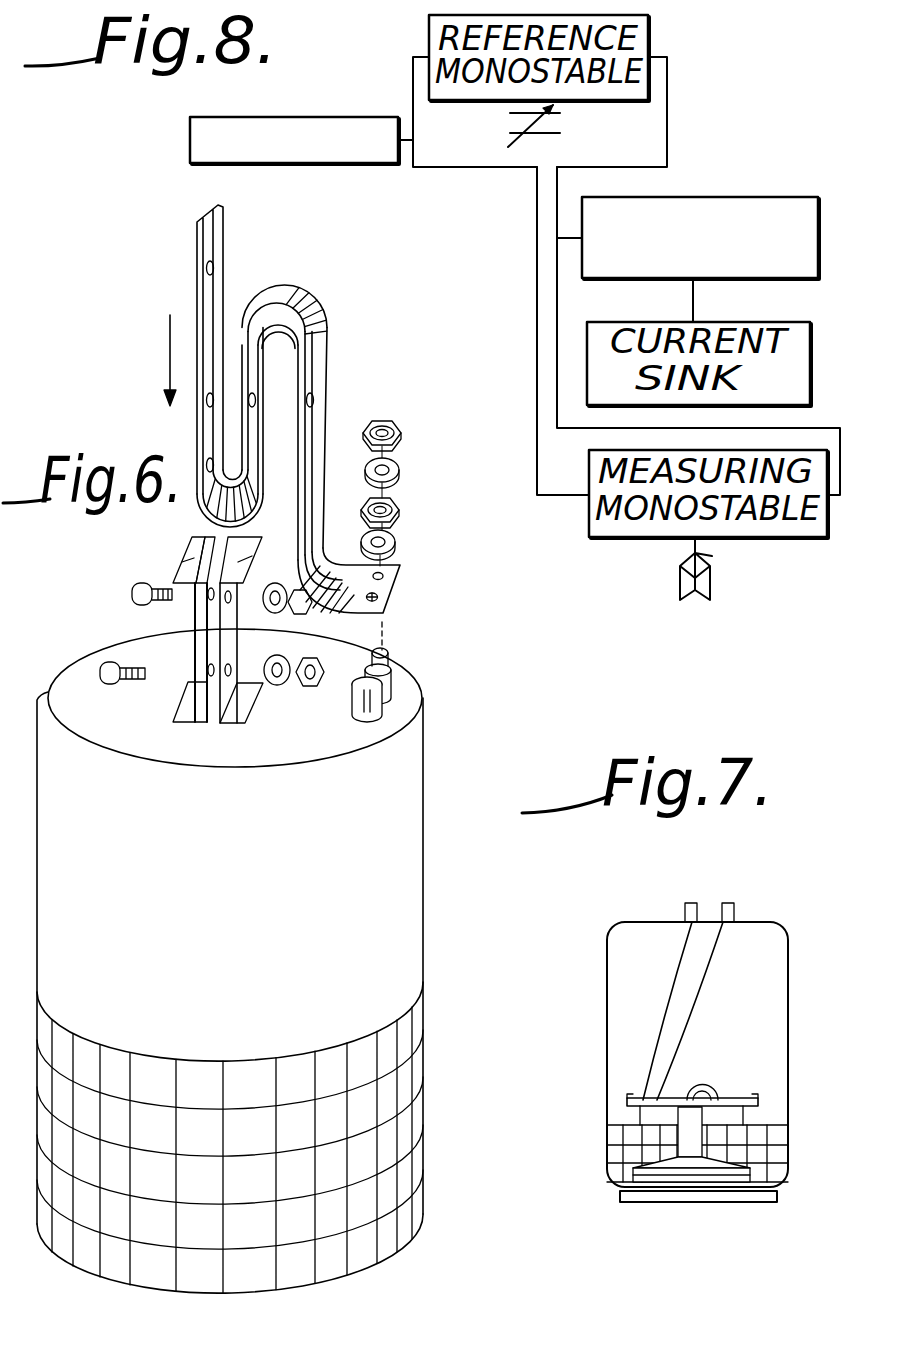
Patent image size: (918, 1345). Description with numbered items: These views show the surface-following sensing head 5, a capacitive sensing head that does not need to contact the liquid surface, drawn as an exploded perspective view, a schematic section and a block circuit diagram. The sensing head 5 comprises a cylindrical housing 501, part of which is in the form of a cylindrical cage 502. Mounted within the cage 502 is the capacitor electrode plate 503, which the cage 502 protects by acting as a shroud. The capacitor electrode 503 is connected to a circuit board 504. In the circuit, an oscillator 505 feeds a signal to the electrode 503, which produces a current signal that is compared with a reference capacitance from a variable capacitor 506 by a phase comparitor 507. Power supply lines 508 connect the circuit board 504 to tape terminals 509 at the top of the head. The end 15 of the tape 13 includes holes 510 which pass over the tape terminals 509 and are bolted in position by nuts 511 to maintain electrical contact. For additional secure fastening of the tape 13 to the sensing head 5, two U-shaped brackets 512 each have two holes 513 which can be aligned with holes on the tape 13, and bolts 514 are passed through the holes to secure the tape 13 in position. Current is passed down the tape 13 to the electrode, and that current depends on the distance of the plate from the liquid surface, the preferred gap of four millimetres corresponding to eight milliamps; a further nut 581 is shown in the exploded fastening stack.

In FIG. 6, the sensing head 5 is at (273, 961).
In FIG. 6, the tape 13 is at (207, 250).
In FIG. 6, the end of the tape 15 is at (380, 598).
In FIG. 6, the cylindrical housing 501 is at (407, 960).
In FIG. 6, the cylindrical cage 502 is at (402, 1086).
In FIG. 7, the cylindrical cage 502 is at (613, 1186).
In FIG. 8, the capacitor electrode plate 503 is at (731, 568).
In FIG. 7, the capacitor electrode plate 503 is at (627, 1171).
In FIG. 7, the circuit board 504 is at (627, 1100).
In FIG. 8, the oscillator 505 is at (365, 98).
In FIG. 8, the variable capacitor 506 is at (499, 126).
In FIG. 8, the phase comparitor 507 is at (657, 198).
In FIG. 7, the power supply lines 508 is at (692, 990).
In FIG. 6, the tape terminals 509 is at (400, 696).
In FIG. 7, the tape terminals 509 is at (760, 890).
In FIG. 6, the holes 510 is at (388, 611).
In FIG. 6, the nuts 511 is at (396, 442).
In FIG. 6, the U-shaped brackets 512 is at (254, 538).
In FIG. 6, the holes 513 is at (218, 682).
In FIG. 6, the bolts 514 is at (125, 658).
In FIG. 6, the lock nut 581 is at (394, 548).